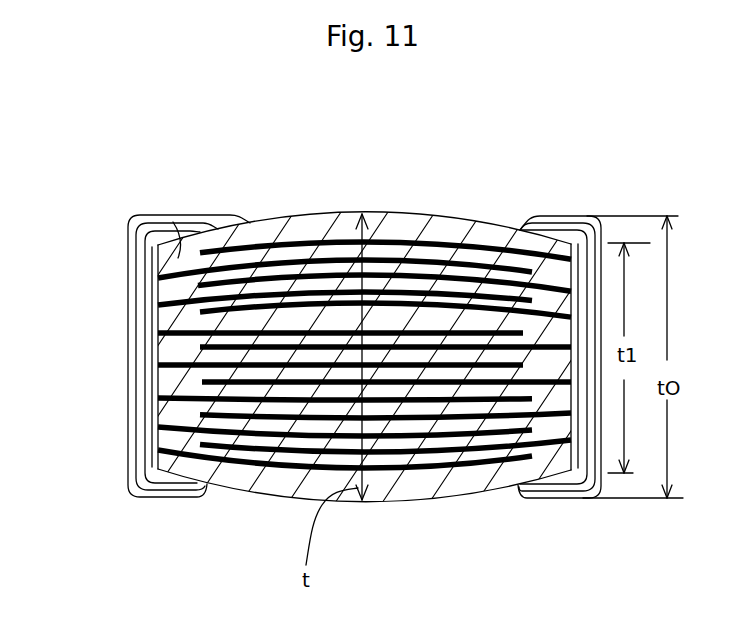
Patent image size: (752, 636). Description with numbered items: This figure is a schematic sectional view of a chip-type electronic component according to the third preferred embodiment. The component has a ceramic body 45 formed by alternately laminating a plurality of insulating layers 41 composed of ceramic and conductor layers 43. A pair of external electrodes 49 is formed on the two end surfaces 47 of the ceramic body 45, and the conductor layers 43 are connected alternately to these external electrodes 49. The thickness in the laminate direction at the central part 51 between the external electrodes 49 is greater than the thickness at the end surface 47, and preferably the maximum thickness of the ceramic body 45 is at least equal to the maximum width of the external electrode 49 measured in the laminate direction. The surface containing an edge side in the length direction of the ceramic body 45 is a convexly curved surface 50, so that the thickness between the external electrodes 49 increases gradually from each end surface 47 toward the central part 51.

The insulating layer 41 is at (130, 228).
The conductor layer 43 is at (205, 215).
The ceramic body 45 is at (478, 214).
The end surface 47 is at (154, 356).
The external electrode 49 is at (128, 457).
The convexly curved surface 50 is at (313, 213).
The central part 51 is at (364, 214).